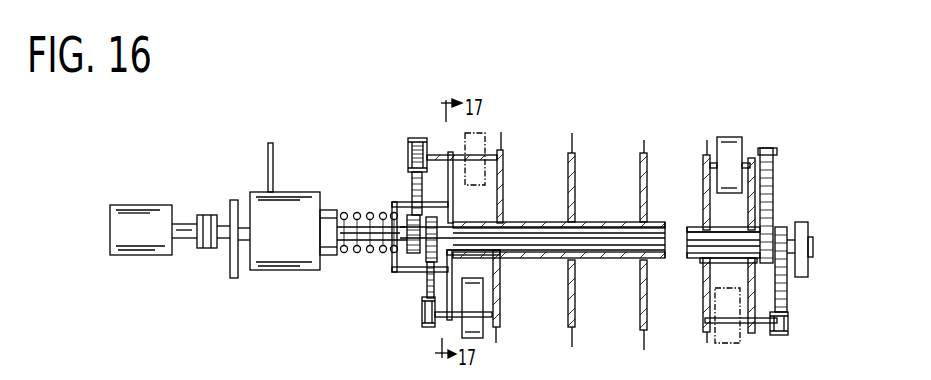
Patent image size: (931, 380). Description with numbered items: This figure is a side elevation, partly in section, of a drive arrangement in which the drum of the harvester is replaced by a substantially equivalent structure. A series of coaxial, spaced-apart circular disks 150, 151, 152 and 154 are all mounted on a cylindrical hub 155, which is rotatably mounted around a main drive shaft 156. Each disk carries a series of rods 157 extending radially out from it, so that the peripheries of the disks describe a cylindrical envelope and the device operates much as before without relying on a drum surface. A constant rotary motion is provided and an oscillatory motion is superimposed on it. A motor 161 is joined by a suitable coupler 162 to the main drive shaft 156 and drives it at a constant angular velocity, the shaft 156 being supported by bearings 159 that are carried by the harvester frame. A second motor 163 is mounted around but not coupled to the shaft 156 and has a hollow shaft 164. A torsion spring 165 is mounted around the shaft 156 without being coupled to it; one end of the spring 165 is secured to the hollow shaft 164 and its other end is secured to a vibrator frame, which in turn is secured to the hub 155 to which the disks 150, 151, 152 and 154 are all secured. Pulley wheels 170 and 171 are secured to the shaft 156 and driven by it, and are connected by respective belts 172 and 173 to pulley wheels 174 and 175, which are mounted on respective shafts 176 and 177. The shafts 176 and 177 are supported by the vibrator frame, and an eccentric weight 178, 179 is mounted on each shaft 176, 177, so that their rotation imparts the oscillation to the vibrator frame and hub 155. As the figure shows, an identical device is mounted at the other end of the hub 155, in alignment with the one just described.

The circular disk 150 is at (503, 160).
The circular disk 151 is at (575, 182).
The circular disk 152 is at (641, 167).
The circular disk 154 is at (704, 172).
The cylindrical hub 155 is at (558, 260).
The main drive shaft 156 is at (243, 240).
The rods 157 is at (638, 338).
The bearings 159 is at (233, 272).
The motor 161 is at (120, 207).
The coupler 162 is at (205, 216).
The second motor 163 is at (263, 200).
The hollow shaft 164 is at (328, 212).
The torsion spring 165 is at (358, 212).
The pulley wheel 170 is at (400, 268).
The pulley wheel 171 is at (772, 258).
The belt 172 is at (408, 162).
The belt 173 is at (425, 303).
The pulley wheel 174 is at (416, 138).
The pulley wheel 175 is at (425, 324).
The shaft 176 is at (489, 153).
The shaft 177 is at (488, 347).
The eccentric weight 178 is at (484, 186).
The eccentric weight 179 is at (487, 268).